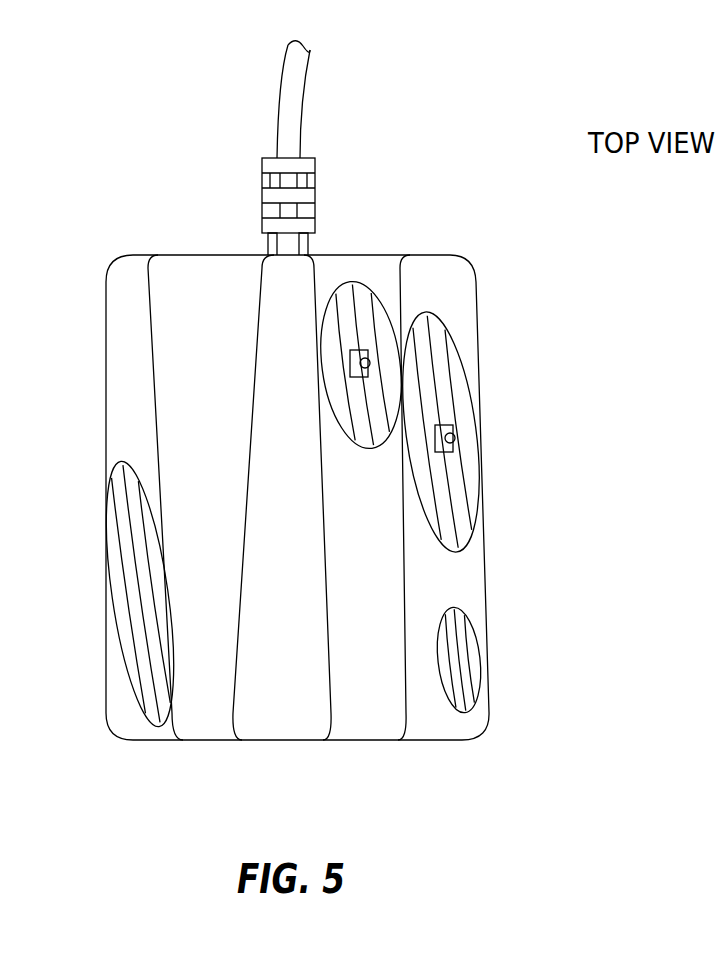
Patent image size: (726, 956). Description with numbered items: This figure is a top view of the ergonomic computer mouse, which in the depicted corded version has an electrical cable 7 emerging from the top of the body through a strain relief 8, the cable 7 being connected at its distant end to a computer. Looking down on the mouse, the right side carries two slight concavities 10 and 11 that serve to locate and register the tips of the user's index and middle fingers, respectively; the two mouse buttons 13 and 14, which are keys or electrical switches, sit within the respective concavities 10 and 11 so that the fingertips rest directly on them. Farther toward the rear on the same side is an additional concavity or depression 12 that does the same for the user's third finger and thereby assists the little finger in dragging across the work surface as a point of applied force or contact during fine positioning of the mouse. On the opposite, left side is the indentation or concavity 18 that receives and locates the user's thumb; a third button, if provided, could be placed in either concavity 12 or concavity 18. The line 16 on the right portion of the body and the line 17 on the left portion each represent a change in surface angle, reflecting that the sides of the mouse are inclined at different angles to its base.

The electrical cable 7 is at (279, 85).
The strain relief 8 is at (262, 173).
The concavity 10 is at (356, 282).
The concavity 11 is at (460, 354).
The concavity 12 is at (468, 622).
The mouse button 13 is at (350, 364).
The mouse button 14 is at (445, 418).
The line 16 is at (406, 578).
The line 17 is at (153, 363).
The concavity 18 is at (137, 673).